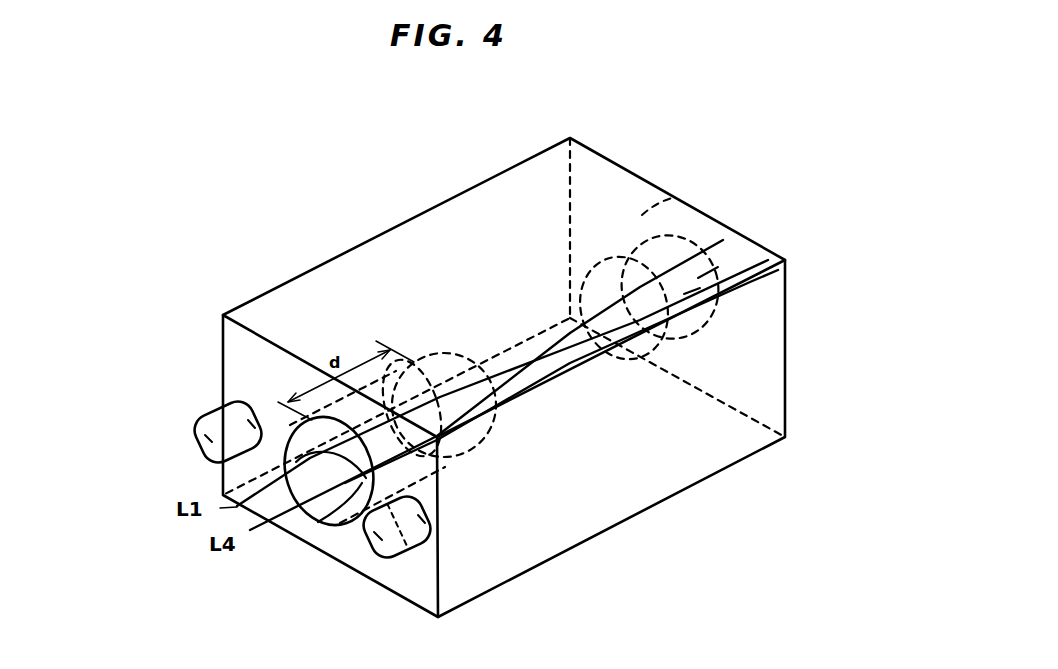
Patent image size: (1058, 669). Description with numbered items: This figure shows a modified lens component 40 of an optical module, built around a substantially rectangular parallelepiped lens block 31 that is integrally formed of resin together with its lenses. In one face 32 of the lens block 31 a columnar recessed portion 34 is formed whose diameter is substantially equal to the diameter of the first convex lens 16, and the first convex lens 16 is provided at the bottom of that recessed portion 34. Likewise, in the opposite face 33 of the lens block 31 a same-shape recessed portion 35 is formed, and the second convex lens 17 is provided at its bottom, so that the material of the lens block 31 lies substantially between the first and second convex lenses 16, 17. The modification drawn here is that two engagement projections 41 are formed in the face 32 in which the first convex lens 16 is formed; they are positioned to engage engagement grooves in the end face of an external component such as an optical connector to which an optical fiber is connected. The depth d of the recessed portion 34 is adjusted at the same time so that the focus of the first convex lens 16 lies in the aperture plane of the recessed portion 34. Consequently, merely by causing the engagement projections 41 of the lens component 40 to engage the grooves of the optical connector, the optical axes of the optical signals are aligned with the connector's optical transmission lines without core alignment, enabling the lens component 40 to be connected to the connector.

The lens component 40 is at (492, 342).
The lens block 31 is at (598, 173).
The face 32 is at (230, 358).
The opposite face 33 is at (668, 196).
The recessed portion 34 is at (335, 517).
The recessed portion 35 is at (698, 277).
The first convex lens 16 is at (450, 452).
The second convex lens 17 is at (685, 294).
The engagement projections 41 is at (197, 425).